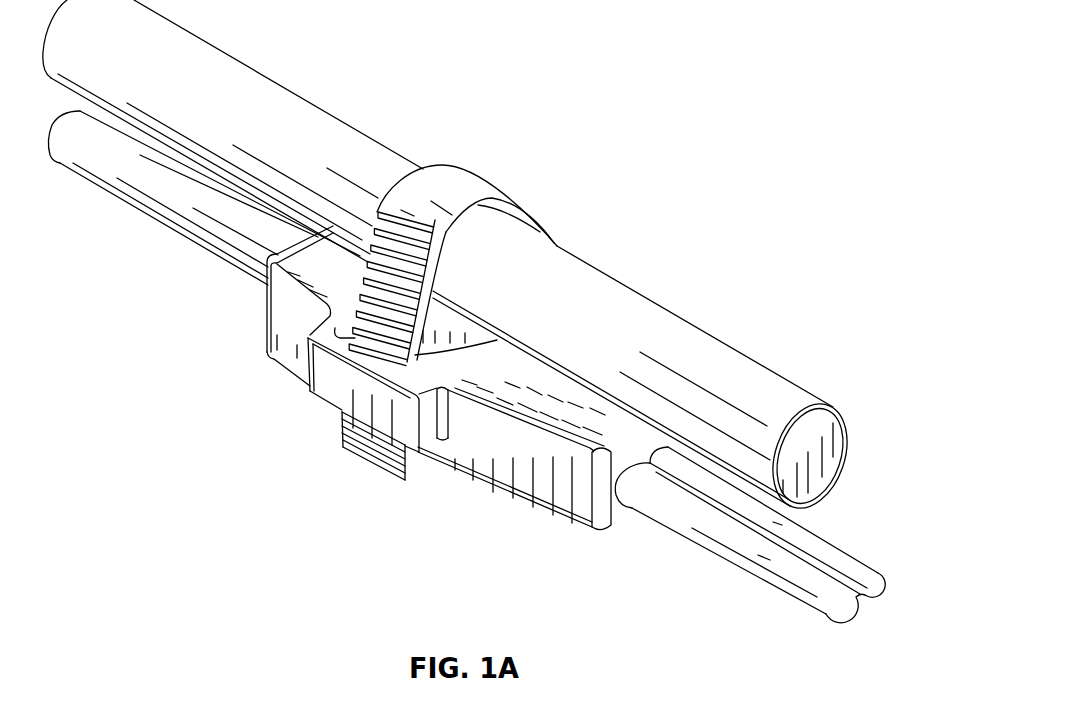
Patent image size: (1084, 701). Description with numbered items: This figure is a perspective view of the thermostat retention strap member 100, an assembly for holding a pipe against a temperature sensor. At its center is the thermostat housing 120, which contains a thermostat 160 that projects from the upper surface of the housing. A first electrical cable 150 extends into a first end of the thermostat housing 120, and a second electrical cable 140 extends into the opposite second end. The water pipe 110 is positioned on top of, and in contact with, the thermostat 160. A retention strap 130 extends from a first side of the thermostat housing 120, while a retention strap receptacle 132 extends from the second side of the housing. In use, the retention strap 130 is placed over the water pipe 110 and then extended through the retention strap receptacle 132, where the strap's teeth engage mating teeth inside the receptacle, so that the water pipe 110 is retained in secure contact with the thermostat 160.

The thermostat retention strap member 100 is at (688, 82).
The water pipe 110 is at (735, 378).
The thermostat housing 120 is at (583, 502).
The retention strap 130 is at (455, 192).
The retention strap receptacle 132 is at (347, 377).
The second electrical cable 140 is at (880, 584).
The first electrical cable 150 is at (173, 203).
The thermostat 160 is at (453, 333).